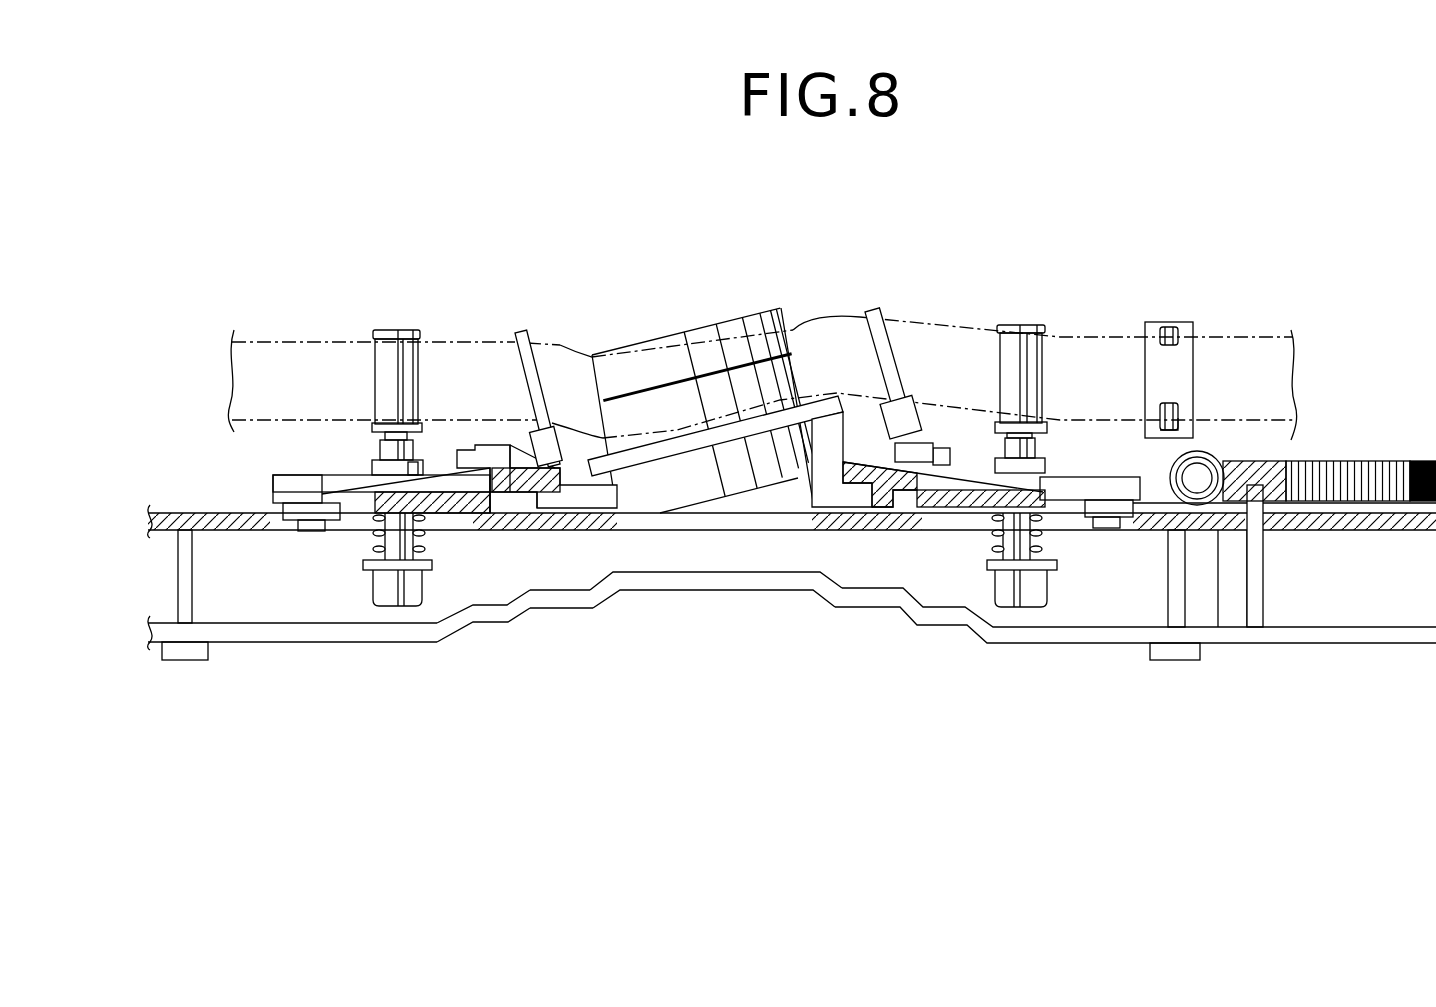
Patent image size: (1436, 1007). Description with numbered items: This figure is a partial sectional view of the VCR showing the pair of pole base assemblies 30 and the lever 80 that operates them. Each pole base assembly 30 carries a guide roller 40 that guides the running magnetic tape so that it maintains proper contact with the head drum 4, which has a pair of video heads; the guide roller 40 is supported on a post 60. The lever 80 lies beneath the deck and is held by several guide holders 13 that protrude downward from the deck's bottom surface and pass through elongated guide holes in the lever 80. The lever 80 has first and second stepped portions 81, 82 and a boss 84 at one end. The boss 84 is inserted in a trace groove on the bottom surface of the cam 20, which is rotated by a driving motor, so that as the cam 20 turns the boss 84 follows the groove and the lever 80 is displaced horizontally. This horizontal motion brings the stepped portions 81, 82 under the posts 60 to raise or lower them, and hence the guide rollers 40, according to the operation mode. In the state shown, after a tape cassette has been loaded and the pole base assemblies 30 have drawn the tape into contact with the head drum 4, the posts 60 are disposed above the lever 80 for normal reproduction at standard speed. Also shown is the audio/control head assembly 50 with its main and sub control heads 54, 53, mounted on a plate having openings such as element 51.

The head drum 4 is at (699, 326).
The guide holder 13 is at (188, 580).
The cam 20 is at (1334, 460).
The pole base assembly 30 is at (706, 373).
The guide roller 40 is at (395, 332).
The audio/control head assembly 50 is at (1188, 324).
The upper slot 51 is at (1173, 325).
The sub control head 53 is at (1173, 404).
The main control head 54 is at (1186, 428).
The post 60 is at (367, 587).
The lever 80 is at (792, 680).
The first stepped portion 81 is at (822, 598).
The second stepped portion 82 is at (493, 626).
The boss 84 is at (1255, 558).